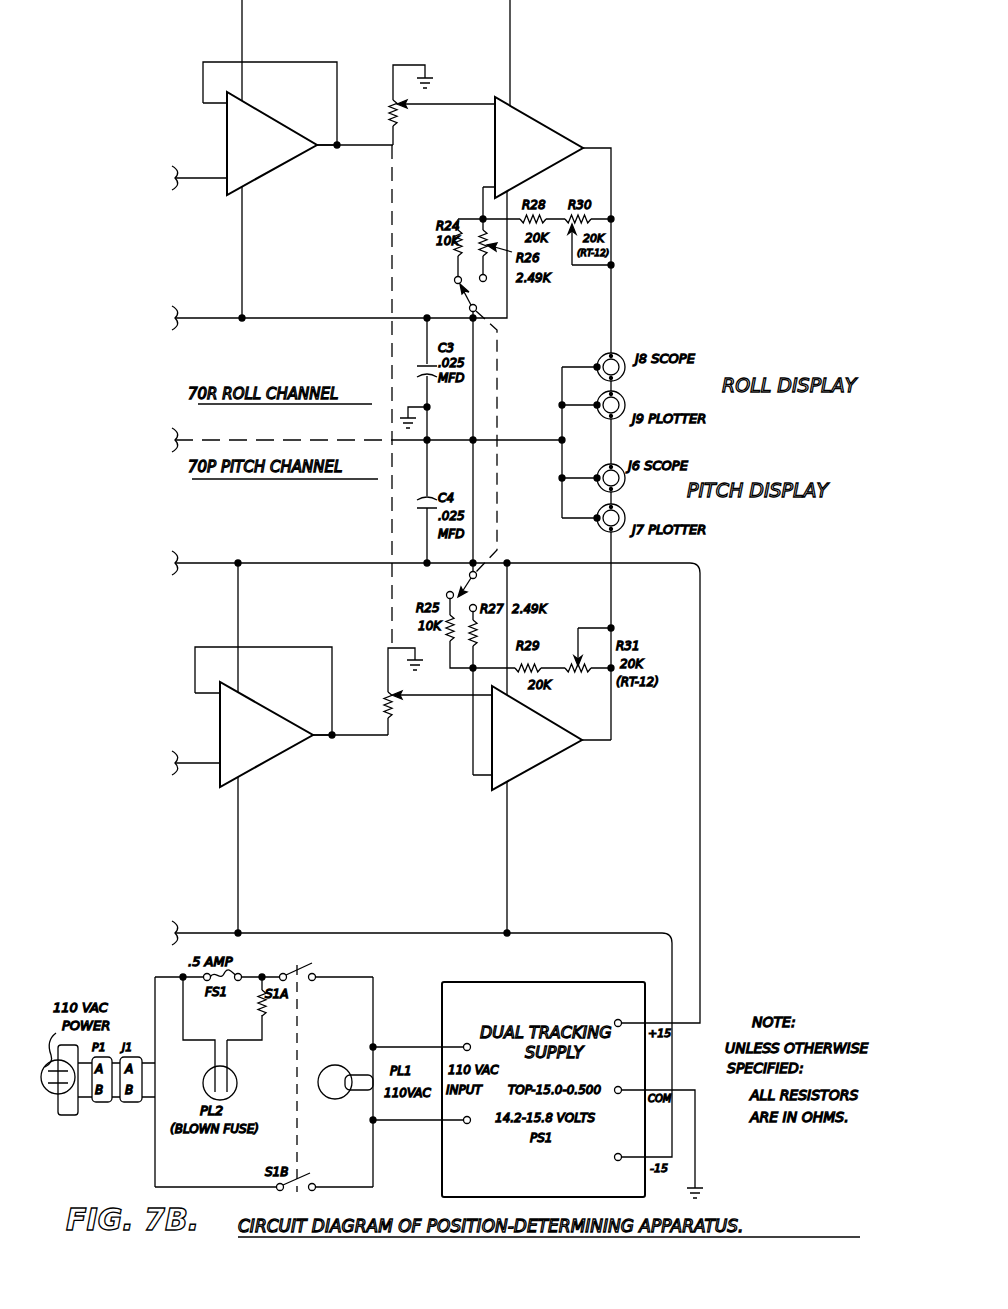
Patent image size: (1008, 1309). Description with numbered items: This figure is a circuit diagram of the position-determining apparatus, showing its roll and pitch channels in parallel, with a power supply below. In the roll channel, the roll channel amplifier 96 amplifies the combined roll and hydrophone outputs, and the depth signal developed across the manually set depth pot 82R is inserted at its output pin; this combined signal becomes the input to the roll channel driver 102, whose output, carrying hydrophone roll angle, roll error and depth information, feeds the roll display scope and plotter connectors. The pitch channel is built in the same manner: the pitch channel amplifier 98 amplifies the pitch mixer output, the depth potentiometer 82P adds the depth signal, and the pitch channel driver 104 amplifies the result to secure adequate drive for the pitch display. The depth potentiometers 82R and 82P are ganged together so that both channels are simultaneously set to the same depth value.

The roll channel amplifier 96 is at (282, 118).
The roll channel driver 102 is at (528, 120).
The pitch channel amplifier 98 is at (278, 708).
The pitch channel driver 104 is at (524, 712).
The depth pot 82R is at (394, 99).
The depth potentiometer 82P is at (391, 686).